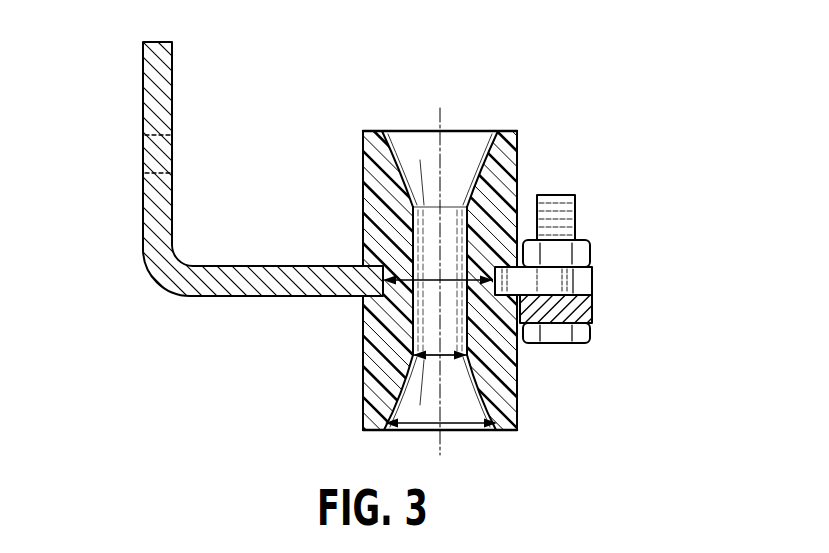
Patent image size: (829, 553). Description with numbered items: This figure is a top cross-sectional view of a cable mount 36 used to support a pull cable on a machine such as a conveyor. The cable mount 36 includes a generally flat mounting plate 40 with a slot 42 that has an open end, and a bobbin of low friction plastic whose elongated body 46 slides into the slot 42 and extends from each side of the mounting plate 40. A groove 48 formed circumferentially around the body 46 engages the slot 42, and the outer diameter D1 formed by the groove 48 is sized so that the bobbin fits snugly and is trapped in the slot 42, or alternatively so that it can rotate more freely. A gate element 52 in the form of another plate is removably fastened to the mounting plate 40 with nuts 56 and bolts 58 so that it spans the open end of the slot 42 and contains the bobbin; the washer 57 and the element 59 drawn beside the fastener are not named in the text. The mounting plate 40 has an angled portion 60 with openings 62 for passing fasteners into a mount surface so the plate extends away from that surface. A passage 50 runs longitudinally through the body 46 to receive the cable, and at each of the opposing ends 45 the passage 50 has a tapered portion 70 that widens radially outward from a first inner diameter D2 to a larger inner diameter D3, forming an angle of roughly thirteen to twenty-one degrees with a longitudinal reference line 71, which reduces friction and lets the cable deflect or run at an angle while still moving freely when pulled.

The cable mount 36 is at (438, 251).
The mounting plate 40 is at (245, 298).
The slot 42 is at (572, 265).
The opposing ends 45 is at (484, 131).
The elongated body 46 is at (518, 352).
The groove 48 is at (561, 205).
The passage 50 is at (410, 222).
The gate element 52 is at (577, 360).
The nuts 56 is at (566, 345).
The washer 57 is at (580, 308).
The bolts 58 is at (578, 248).
The pin shoulder 59 is at (577, 278).
The angled portion 60 is at (173, 70).
The openings 62 is at (318, 192).
The tapered portion 70 is at (398, 155).
The longitudinal reference line 71 is at (441, 114).
The outer diameter D1 is at (408, 268).
The first inner diameter D2 is at (414, 350).
The larger inner diameter D3 is at (386, 419).